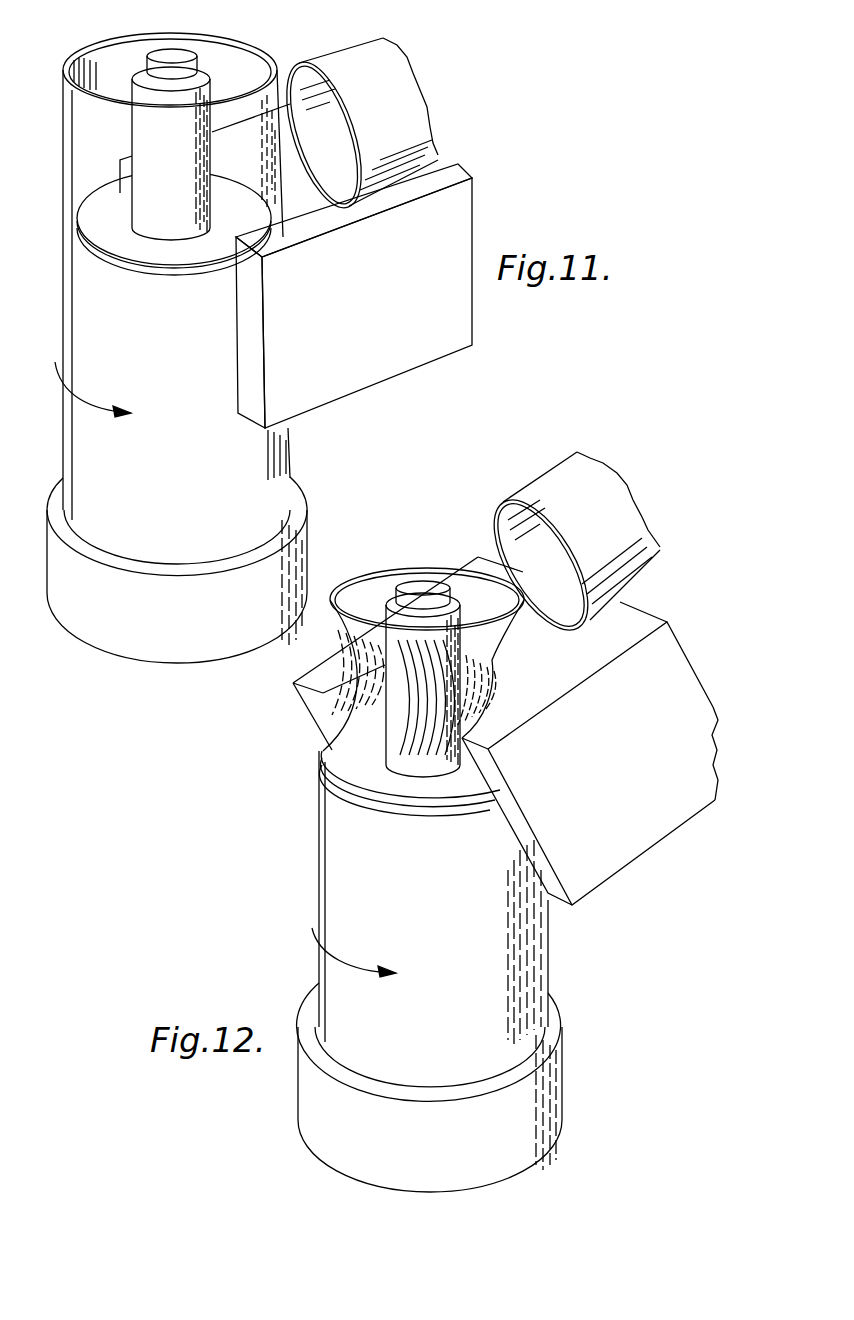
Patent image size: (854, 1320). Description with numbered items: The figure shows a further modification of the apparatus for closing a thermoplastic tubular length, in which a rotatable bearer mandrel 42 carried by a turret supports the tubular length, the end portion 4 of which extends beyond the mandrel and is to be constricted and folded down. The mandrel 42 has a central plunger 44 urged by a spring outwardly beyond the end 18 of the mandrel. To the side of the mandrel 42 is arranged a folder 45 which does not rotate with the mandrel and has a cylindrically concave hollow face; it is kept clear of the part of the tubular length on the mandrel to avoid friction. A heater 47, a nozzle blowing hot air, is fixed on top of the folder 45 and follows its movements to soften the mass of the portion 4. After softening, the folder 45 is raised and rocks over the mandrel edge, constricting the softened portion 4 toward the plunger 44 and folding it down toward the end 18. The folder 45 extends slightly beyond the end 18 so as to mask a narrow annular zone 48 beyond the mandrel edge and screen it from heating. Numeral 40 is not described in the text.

In FIG. 11, the portion of the tubular length 4 is at (90, 153).
In FIG. 12, the portion of the tubular length 4 is at (370, 699).
In FIG. 11, the end of the mandrel 18 is at (105, 235).
In FIG. 12, the end of the mandrel 18 is at (367, 775).
In FIG. 12, the sheet edge 40 is at (345, 717).
In FIG. 11, the bearer mandrel 42 is at (177, 547).
In FIG. 12, the bearer mandrel 42 is at (390, 1063).
In FIG. 11, the central plunger 44 is at (188, 62).
In FIG. 12, the central plunger 44 is at (417, 585).
In FIG. 11, the folder 45 is at (354, 296).
In FIG. 12, the folder 45 is at (590, 753).
In FIG. 11, the heater 47 is at (408, 98).
In FIG. 12, the heater 47 is at (607, 492).
In FIG. 11, the annular zone 48 is at (258, 200).